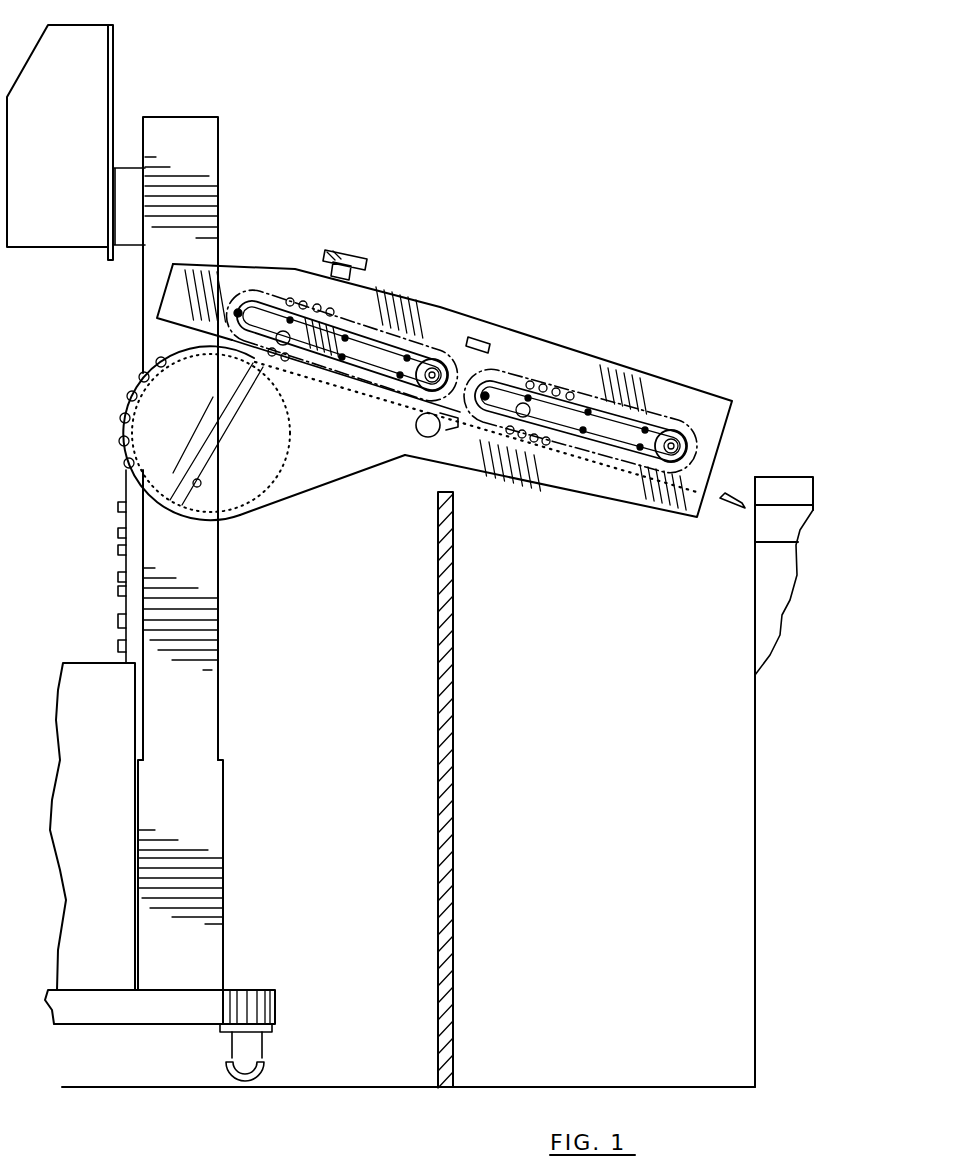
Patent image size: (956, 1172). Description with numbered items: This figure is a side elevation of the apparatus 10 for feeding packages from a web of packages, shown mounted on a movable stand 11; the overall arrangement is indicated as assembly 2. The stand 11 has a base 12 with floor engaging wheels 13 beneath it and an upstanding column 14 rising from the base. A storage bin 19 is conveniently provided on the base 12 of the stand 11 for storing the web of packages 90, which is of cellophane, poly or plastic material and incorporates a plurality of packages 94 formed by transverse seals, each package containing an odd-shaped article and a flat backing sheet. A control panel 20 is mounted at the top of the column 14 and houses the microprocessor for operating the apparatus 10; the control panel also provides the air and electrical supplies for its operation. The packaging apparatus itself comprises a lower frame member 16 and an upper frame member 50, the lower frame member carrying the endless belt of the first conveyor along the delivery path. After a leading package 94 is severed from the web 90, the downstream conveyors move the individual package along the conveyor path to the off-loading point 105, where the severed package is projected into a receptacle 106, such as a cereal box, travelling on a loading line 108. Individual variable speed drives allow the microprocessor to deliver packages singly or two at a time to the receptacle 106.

The apparatus 2 is at (660, 338).
The apparatus 10 is at (441, 300).
The movable stand 11 is at (228, 622).
The base 12 is at (238, 1003).
The floor engaging wheels 13 is at (262, 1068).
The upstanding column 14 is at (213, 563).
The lower frame member 16 is at (305, 467).
The storage bin 19 is at (105, 796).
The control panel 20 is at (70, 144).
The upper frame member 50 is at (557, 356).
The web of packages 90 is at (118, 578).
The packages 94 is at (118, 536).
The off-loading point 105 is at (736, 485).
The receptacle 106 is at (766, 525).
The loading line 108 is at (766, 583).